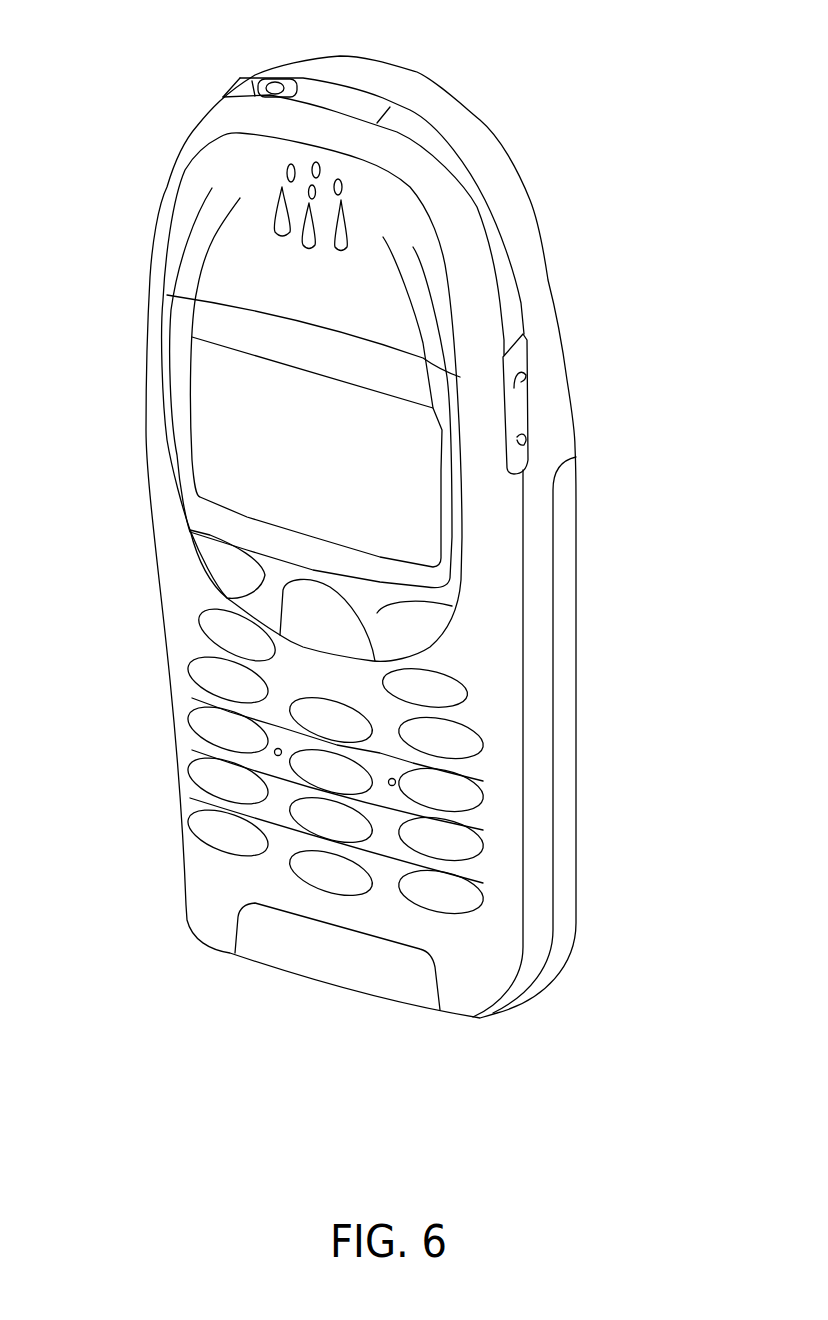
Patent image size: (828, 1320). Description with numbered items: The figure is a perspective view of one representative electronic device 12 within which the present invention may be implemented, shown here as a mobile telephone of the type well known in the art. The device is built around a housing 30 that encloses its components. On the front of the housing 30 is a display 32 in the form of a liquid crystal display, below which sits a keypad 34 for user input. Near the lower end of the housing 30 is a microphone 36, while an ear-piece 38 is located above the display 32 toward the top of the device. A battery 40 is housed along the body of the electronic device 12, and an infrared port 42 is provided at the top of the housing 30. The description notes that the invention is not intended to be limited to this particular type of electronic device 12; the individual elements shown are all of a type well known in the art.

The electronic device 12 is at (382, 545).
The housing 30 is at (533, 250).
The display 32 is at (410, 500).
The keypad 34 is at (440, 897).
The microphone 36 is at (262, 945).
The ear-piece 38 is at (300, 200).
The battery 40 is at (563, 877).
The infrared port 42 is at (343, 97).